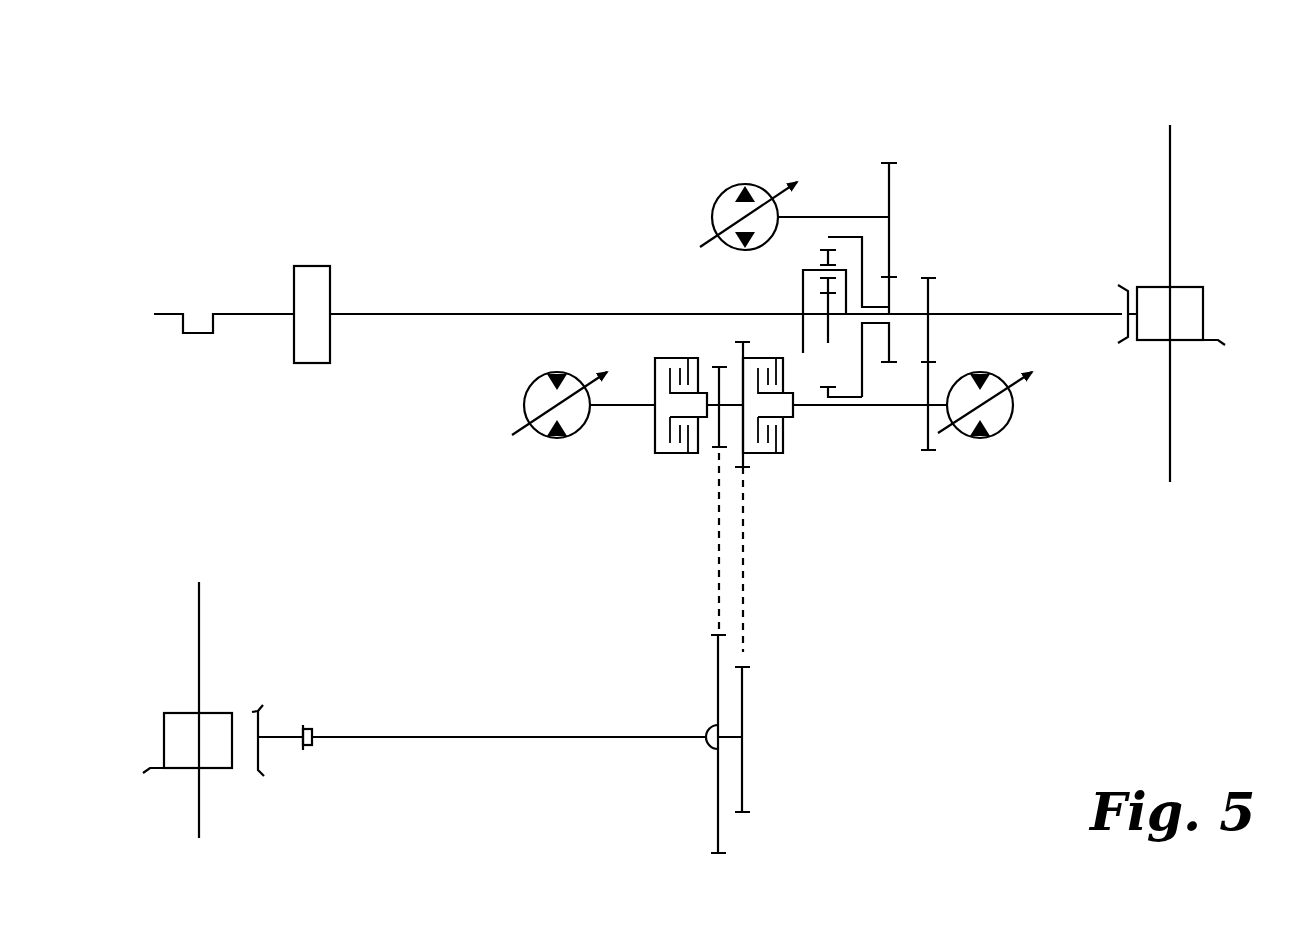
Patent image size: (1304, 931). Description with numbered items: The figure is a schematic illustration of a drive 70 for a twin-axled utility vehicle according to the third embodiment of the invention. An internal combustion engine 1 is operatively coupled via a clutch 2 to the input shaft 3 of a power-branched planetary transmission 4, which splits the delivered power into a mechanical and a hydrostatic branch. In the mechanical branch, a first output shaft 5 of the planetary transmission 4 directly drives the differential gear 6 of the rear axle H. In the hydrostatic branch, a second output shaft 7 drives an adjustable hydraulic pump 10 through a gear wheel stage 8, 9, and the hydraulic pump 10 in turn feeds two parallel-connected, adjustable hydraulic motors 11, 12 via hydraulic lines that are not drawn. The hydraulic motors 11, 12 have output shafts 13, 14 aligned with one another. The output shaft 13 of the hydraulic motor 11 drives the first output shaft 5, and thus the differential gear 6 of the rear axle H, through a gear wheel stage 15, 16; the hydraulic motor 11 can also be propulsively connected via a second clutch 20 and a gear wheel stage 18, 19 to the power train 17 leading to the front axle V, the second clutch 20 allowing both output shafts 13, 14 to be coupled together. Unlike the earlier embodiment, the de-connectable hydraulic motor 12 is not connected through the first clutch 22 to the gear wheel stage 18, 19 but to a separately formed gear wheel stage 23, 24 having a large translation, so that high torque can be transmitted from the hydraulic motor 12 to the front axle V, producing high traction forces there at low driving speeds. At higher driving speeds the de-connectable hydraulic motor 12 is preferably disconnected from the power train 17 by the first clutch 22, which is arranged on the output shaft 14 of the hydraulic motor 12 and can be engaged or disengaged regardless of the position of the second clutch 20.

The internal combustion engine 1 is at (199, 330).
The clutch 2 is at (310, 272).
The input shaft 3 is at (460, 313).
The planetary transmission 4 is at (836, 185).
The first output shaft 5 is at (1072, 315).
The differential gear 6 is at (1186, 302).
The second output shaft 7 is at (868, 323).
The gear wheel stage 8 is at (892, 296).
The gear wheel stage 9 is at (893, 162).
The hydraulic pump 10 is at (735, 212).
The hydraulic motor 11 is at (994, 410).
The hydraulic motor 12 is at (543, 423).
The output shaft 13 is at (825, 407).
The output shaft 14 is at (606, 408).
The gear wheel stage 15 is at (931, 440).
The gear wheel stage 16 is at (931, 303).
The power train 17 is at (540, 737).
The gear wheel stage 18 is at (740, 355).
The gear wheel stage 19 is at (745, 710).
The second clutch 20 is at (768, 455).
The first clutch 22 is at (678, 455).
The gear wheel stage 23 is at (717, 453).
The gear wheel stage 24 is at (718, 693).
The drive 70 is at (546, 142).
The rear axle H is at (1173, 403).
The front axle V is at (200, 610).